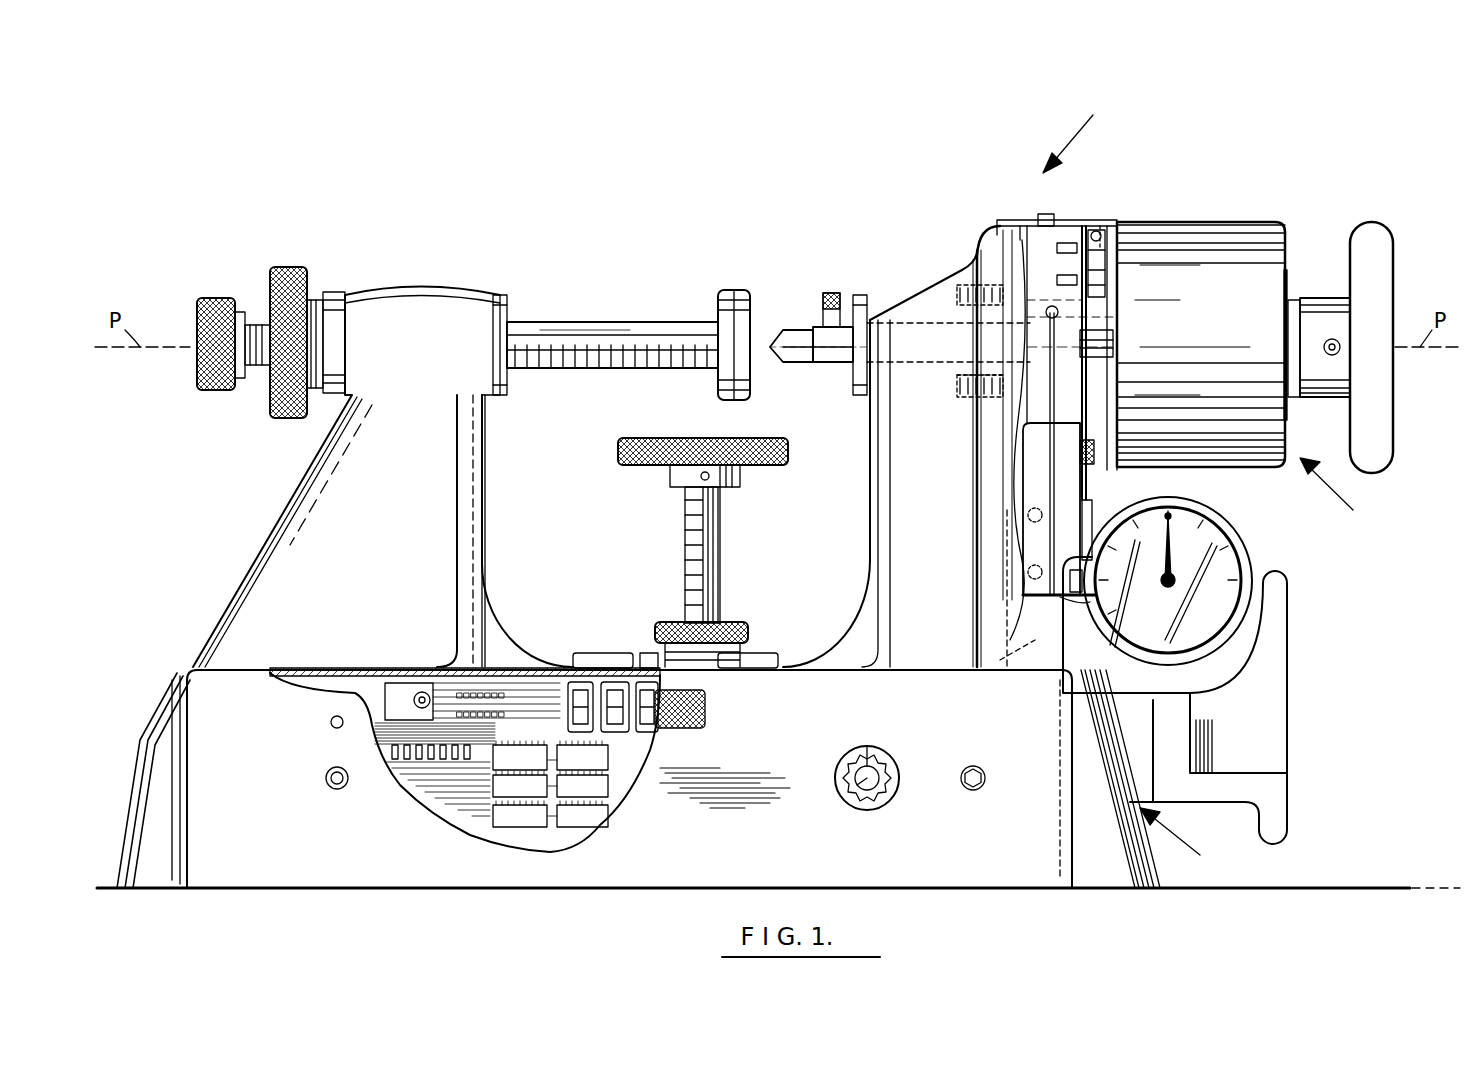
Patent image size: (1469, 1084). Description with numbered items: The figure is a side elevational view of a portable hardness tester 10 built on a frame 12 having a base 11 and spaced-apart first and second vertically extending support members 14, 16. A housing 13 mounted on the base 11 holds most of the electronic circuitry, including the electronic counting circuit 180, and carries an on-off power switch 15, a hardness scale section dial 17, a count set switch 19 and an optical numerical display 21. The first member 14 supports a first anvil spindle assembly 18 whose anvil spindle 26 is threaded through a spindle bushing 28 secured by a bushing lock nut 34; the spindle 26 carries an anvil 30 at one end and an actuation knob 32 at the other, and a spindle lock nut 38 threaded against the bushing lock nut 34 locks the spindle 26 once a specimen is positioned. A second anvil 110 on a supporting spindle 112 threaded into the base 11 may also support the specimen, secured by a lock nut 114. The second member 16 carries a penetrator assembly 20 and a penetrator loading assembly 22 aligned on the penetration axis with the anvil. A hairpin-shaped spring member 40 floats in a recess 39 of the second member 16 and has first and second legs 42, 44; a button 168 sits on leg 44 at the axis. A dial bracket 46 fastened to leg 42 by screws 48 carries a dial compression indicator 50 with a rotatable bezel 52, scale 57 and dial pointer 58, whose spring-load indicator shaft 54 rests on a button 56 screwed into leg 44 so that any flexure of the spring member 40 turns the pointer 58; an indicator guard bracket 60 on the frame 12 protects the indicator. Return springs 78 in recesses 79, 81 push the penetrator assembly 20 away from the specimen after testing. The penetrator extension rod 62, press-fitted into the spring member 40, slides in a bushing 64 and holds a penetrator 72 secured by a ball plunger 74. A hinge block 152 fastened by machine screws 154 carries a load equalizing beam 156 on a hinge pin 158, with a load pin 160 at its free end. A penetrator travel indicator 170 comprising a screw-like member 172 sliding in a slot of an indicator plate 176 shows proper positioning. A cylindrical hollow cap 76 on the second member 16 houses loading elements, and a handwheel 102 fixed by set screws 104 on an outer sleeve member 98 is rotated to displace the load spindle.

The portable hardness tester 10 is at (1081, 130).
The base 11 is at (202, 892).
The frame 12 is at (1160, 779).
The housing 13 is at (1010, 905).
The first vertically extending support member 14 is at (290, 525).
The on-off power switch 15 is at (326, 780).
The second vertically extending support member 16 is at (890, 520).
The hardness scale section dial 17 is at (850, 790).
The first anvil spindle assembly 18 is at (585, 322).
The count set switch 19 is at (985, 775).
The penetrator assembly 20 is at (801, 316).
The optical numerical display 21 is at (685, 728).
The penetrator loading assembly 22 is at (1340, 500).
The anvil spindle 26 is at (608, 345).
The spindle bushing 28 is at (510, 295).
The anvil 30 is at (740, 290).
The actuation knob 32 is at (215, 298).
The bushing lock nut 34 is at (338, 292).
The spindle lock nut 38 is at (288, 267).
The recess 39 is at (1020, 660).
The spring member 40 is at (1072, 298).
The first leg 42 is at (1030, 472).
The second leg 44 is at (1092, 470).
The dial bracket 46 is at (1120, 520).
The screws 48 is at (1028, 572).
The dial compression indicator 50 is at (1188, 520).
The rotatable bezel 52 is at (1175, 540).
The spring-load indicator shaft 54 is at (1080, 605).
The button 56 is at (1010, 660).
The scale 57 is at (1140, 628).
The dial pointer 58 is at (1215, 553).
The indicator guard bracket 60 is at (1290, 708).
The penetrator extension rod 62 is at (838, 350).
The bushing 64 is at (858, 395).
The penetrator 72 is at (802, 352).
The ball plunger 74 is at (836, 293).
The cylindrical hollow cap 76 is at (1238, 222).
The return springs 78 is at (968, 285).
The recess 79 is at (957, 386).
The recess 81 is at (965, 292).
The outer sleeve member 98 is at (1292, 310).
The handwheel 102 is at (1380, 432).
The set screws 104 is at (1328, 360).
The second anvil 110 is at (618, 452).
The supporting spindle 112 is at (685, 556).
The lock nut 114 is at (740, 625).
The hinge block 152 is at (1080, 262).
The machine screws 154 is at (1088, 225).
The load equalizing beam 156 is at (1100, 262).
The hinge pin 158 is at (1105, 228).
The load pin 160 is at (1020, 425).
The button 168 is at (1105, 335).
The penetrator travel indicator 170 is at (1047, 214).
The screw-like member 172 is at (1020, 226).
The indicator plate 176 is at (997, 226).
The electronic counting circuit 180 is at (478, 808).